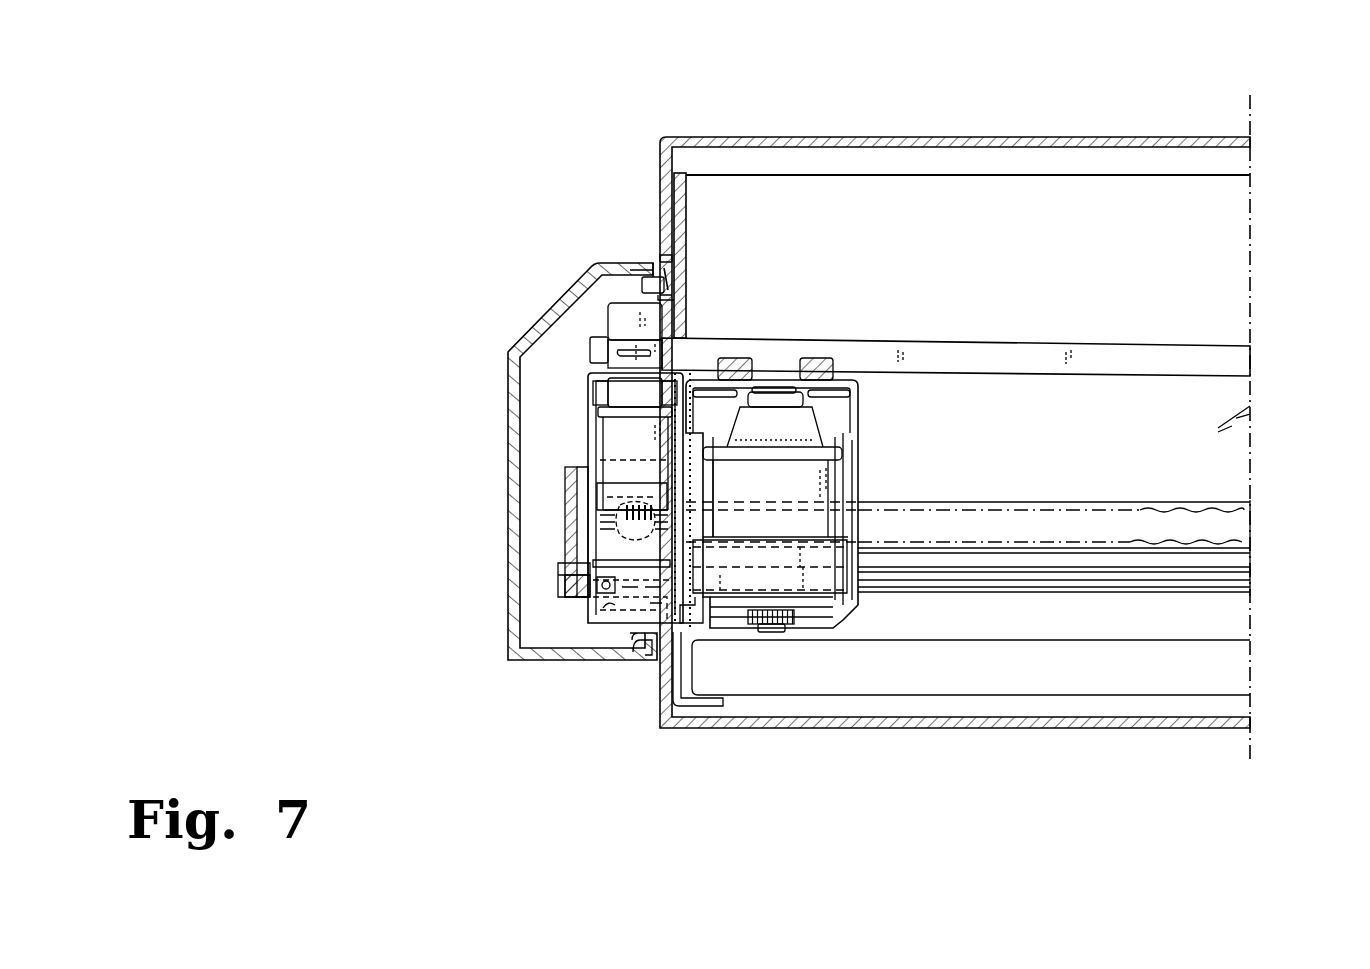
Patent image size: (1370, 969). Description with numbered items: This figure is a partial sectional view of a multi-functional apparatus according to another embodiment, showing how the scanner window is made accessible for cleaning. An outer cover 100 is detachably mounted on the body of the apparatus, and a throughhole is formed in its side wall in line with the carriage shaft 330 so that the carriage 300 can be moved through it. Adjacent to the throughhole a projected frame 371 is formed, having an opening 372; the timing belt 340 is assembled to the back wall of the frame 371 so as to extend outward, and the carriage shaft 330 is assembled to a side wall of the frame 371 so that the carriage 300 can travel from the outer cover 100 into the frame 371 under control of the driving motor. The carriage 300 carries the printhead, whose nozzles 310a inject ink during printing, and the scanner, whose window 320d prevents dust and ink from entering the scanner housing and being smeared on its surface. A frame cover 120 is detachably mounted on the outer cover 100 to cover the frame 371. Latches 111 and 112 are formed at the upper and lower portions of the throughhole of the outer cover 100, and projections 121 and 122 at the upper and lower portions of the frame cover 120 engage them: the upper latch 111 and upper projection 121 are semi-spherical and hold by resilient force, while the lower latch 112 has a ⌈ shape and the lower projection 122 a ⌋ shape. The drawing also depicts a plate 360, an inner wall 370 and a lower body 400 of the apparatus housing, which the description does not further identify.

The outer cover 100 is at (655, 149).
The upper latch 111 is at (645, 287).
The lower latch 112 is at (633, 661).
The frame cover 120 is at (522, 332).
The upper projection 121 is at (656, 263).
The lower projection 122 is at (648, 661).
The carriage 300 is at (856, 613).
The nozzles 310a is at (775, 632).
The window 320d is at (591, 629).
The carriage shaft 330 is at (1212, 590).
The timing belt 340 is at (1192, 505).
The support plate 360 is at (966, 347).
The inner wall 370 is at (681, 222).
The frame 371 is at (566, 498).
The opening 372 is at (558, 591).
The lower body 400 is at (1242, 669).